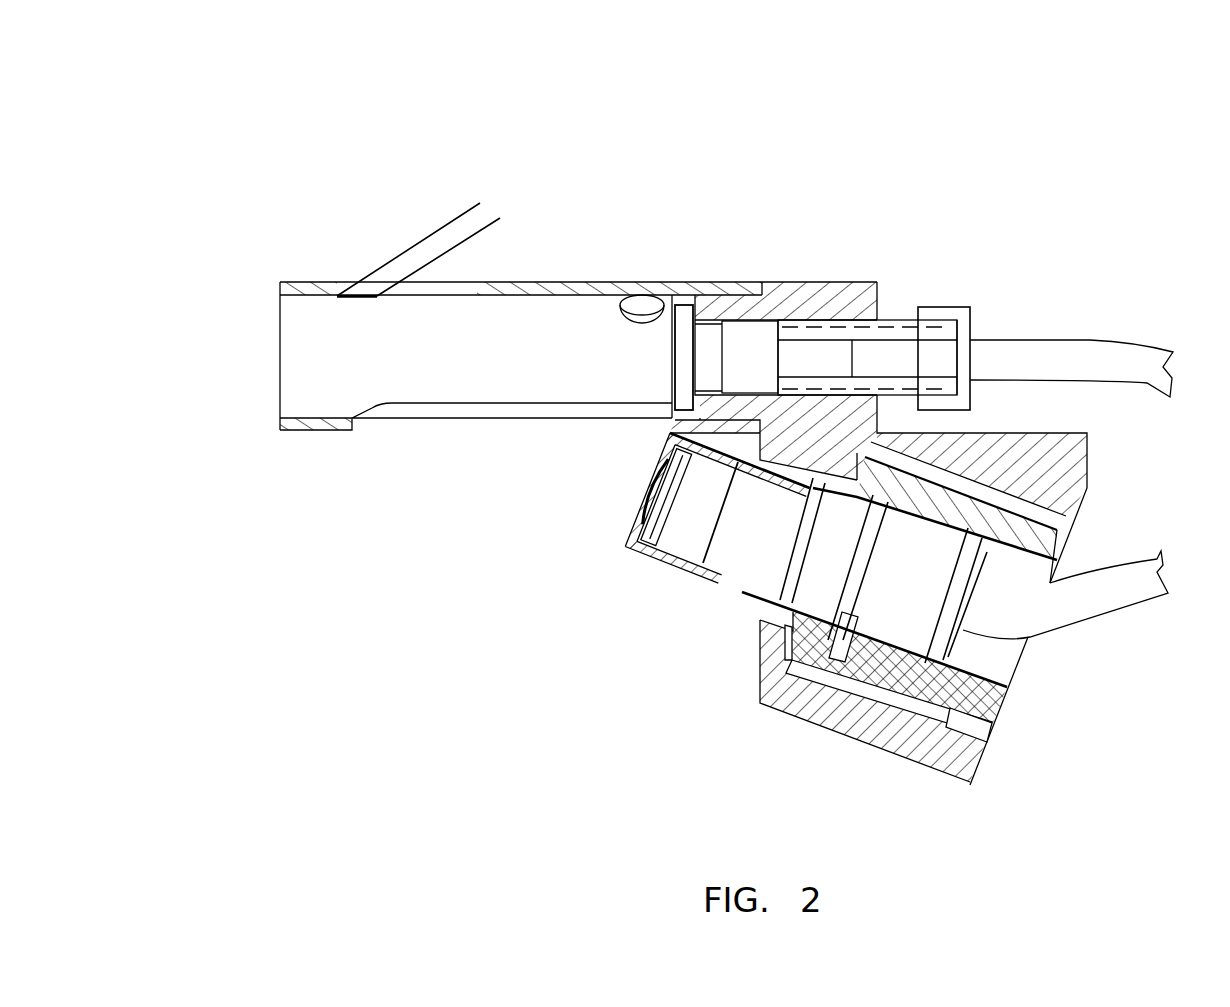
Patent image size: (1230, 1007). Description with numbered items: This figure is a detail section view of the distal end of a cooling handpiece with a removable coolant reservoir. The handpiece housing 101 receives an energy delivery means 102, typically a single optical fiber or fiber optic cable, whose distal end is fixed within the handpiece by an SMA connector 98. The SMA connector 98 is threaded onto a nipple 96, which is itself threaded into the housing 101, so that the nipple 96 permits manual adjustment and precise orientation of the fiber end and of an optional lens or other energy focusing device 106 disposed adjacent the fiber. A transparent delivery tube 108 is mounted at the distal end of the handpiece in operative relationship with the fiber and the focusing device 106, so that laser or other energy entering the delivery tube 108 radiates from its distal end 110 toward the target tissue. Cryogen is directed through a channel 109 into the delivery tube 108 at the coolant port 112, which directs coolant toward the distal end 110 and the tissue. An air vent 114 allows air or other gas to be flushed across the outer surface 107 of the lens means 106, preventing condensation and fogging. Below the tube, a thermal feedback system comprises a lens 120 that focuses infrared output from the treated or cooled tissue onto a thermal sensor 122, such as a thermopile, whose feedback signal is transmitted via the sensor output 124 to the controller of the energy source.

The nipple 96 is at (900, 318).
The SMA connector 98 is at (963, 315).
The housing 101 is at (1060, 475).
The energy delivery means 102 is at (1108, 360).
The lens or other energy focusing device 106 is at (736, 357).
The outer surface of lens means 107 is at (670, 353).
The delivery tube 108 is at (328, 354).
The channel 109 is at (465, 196).
The distal end of delivery tube 110 is at (280, 282).
The coolant port 112 is at (337, 297).
The air vent 114 is at (642, 307).
The lens 120 is at (717, 517).
The thermal sensor 122 is at (880, 572).
The sensor output 124 is at (1135, 583).